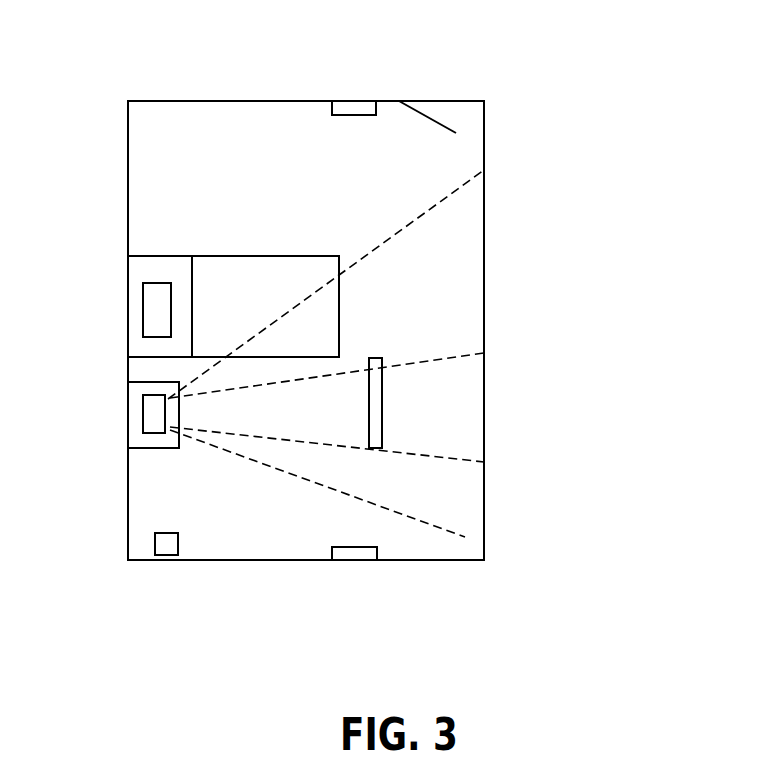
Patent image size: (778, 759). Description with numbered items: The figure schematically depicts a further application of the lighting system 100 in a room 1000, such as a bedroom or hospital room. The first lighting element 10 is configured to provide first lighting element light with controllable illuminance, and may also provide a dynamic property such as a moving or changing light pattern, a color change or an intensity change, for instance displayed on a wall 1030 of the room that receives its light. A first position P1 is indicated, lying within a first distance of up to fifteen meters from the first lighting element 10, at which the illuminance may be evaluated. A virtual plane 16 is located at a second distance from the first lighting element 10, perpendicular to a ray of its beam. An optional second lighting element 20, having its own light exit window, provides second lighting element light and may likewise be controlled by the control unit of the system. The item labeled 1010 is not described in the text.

The room 1000 is at (478, 80).
The bed 1010 is at (261, 228).
The wall 1030 is at (473, 317).
The lighting system 100 is at (263, 550).
The first lighting element 10 is at (137, 424).
The virtual plane 16 is at (375, 427).
The second lighting element 20 is at (357, 100).
The first position P1 is at (205, 307).